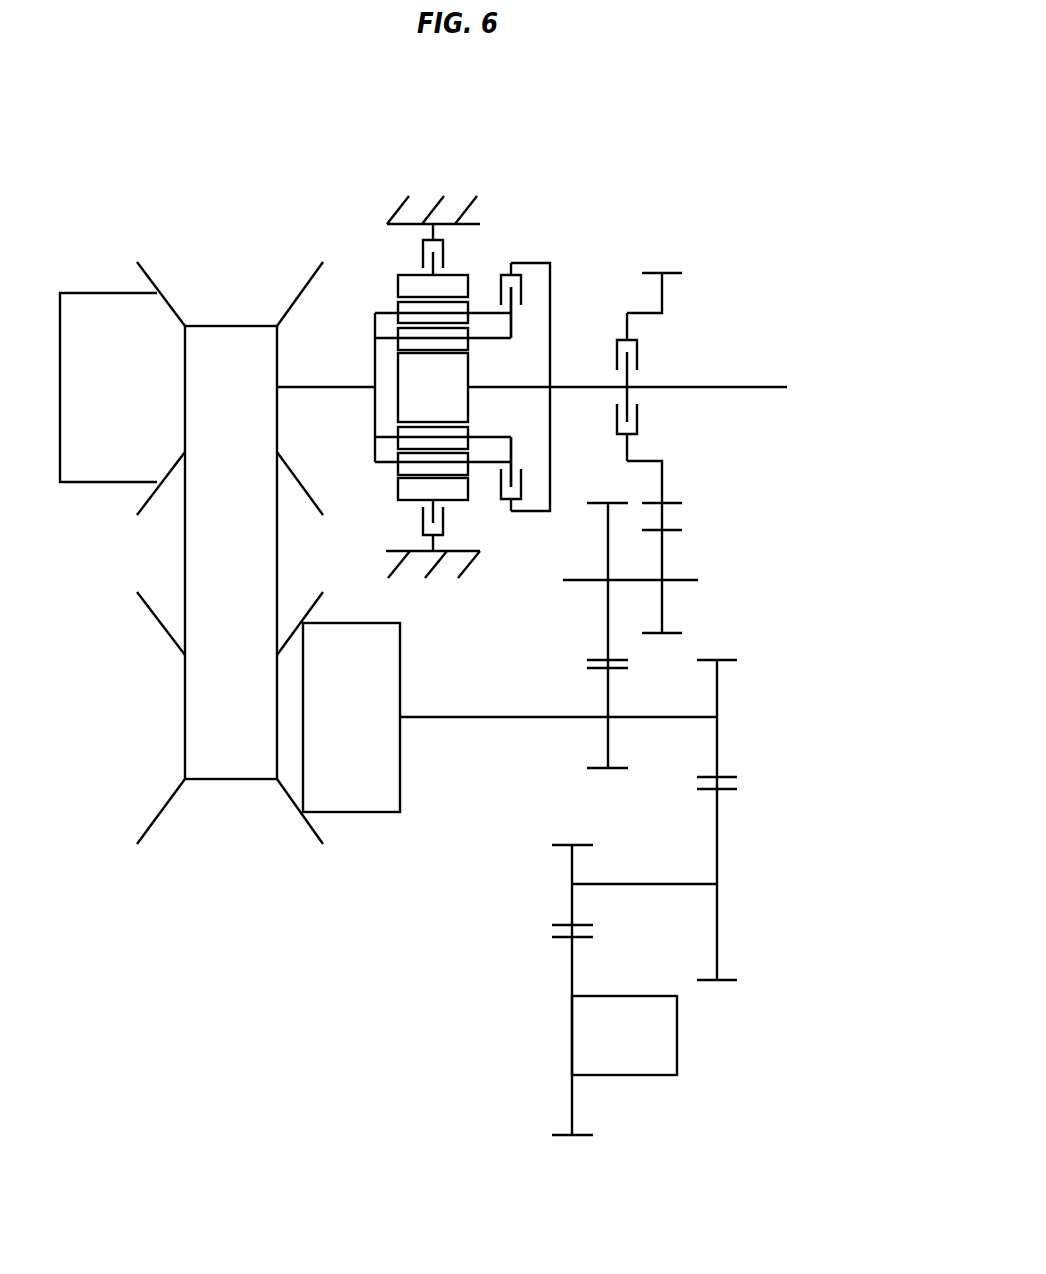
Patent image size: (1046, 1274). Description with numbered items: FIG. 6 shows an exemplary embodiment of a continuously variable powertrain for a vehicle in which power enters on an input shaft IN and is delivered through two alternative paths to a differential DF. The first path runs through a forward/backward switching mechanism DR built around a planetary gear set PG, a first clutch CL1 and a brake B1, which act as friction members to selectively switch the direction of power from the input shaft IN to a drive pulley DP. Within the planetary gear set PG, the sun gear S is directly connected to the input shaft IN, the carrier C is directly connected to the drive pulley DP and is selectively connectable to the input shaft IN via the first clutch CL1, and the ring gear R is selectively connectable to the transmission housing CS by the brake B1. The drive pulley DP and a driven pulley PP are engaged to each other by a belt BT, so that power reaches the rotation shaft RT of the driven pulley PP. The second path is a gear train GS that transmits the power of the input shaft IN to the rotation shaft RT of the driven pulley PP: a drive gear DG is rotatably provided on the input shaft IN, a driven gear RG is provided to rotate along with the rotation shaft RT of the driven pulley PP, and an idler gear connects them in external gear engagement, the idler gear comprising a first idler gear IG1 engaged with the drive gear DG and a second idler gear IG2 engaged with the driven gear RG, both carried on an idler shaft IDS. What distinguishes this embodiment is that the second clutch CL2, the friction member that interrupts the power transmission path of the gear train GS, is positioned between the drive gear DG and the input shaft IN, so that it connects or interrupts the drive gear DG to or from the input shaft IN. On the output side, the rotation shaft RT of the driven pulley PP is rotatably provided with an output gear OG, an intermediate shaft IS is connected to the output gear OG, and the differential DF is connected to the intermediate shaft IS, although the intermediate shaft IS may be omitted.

The drive pulley DP is at (152, 272).
The belt BT is at (185, 558).
The driven pulley PP is at (150, 830).
The carrier C is at (375, 360).
The planetary gear set PG is at (390, 270).
The ring gear R is at (398, 287).
The sun gear S is at (468, 367).
The brake B1 is at (413, 246).
The transmission housing CS is at (432, 212).
The first clutch CL1 is at (502, 270).
The forward/backward switching mechanism DR is at (558, 233).
The input shaft IN is at (767, 392).
The second clutch CL2 is at (643, 347).
The drive gear DG is at (670, 272).
The first idler gear IG1 is at (680, 532).
The idler shaft IDS is at (570, 579).
The second idler gear IG2 is at (618, 658).
The driven gear RG is at (618, 670).
The gear train GS is at (785, 493).
The rotation shaft RT is at (487, 719).
The output gear OG is at (730, 776).
The intermediate shaft IS is at (695, 883).
The differential DF is at (677, 1033).